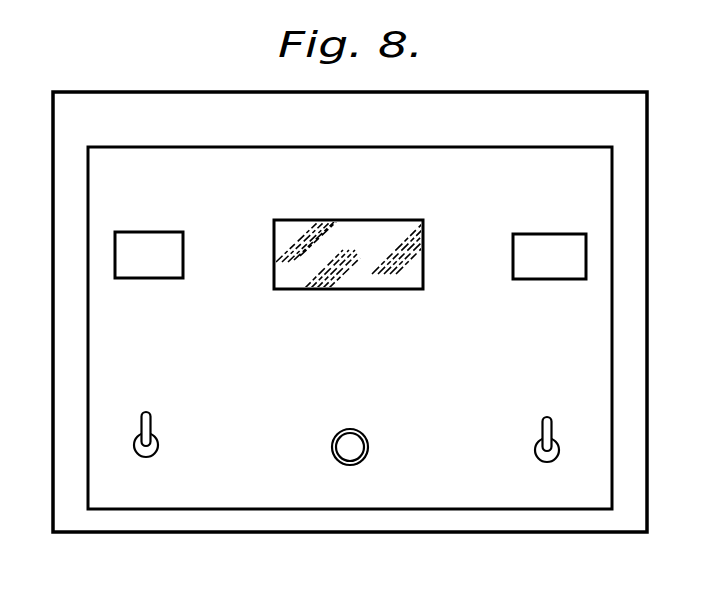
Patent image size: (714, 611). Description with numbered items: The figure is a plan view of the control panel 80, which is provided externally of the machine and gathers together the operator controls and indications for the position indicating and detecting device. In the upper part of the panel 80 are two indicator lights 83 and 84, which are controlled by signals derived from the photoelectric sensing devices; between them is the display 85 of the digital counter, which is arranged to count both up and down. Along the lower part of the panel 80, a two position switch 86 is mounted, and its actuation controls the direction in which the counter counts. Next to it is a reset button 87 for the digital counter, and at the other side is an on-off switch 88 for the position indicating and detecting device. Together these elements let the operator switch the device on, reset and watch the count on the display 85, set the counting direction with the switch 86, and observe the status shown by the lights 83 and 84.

The control panel 80 is at (237, 478).
The indicator light 83 is at (137, 232).
The indicator light 84 is at (552, 234).
The display 85 is at (370, 186).
The two position switch 86 is at (534, 452).
The reset button 87 is at (344, 452).
The on-off switch 88 is at (160, 448).